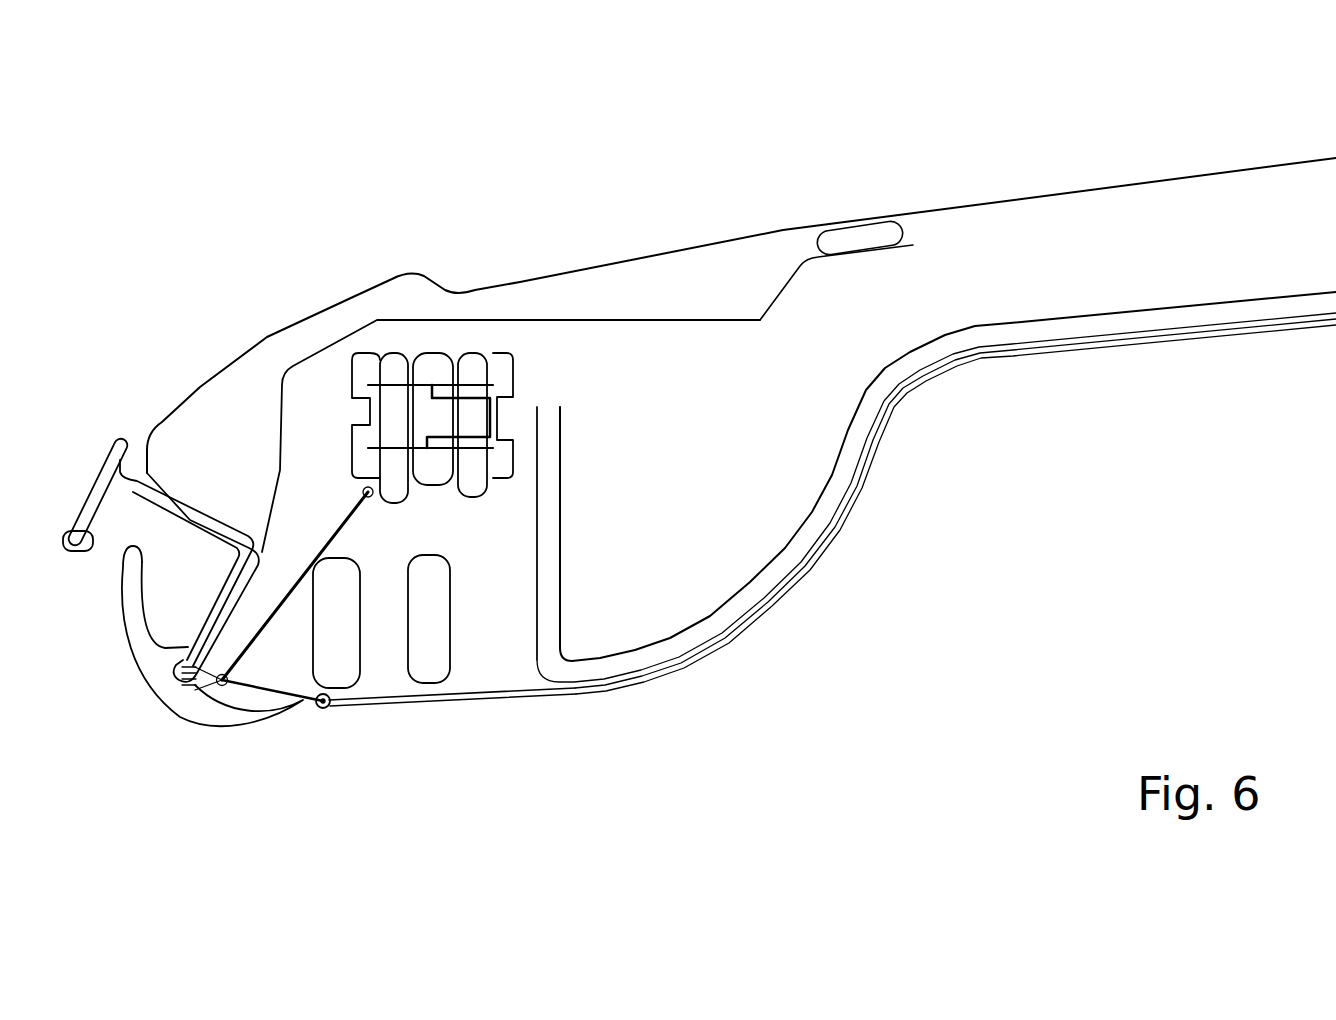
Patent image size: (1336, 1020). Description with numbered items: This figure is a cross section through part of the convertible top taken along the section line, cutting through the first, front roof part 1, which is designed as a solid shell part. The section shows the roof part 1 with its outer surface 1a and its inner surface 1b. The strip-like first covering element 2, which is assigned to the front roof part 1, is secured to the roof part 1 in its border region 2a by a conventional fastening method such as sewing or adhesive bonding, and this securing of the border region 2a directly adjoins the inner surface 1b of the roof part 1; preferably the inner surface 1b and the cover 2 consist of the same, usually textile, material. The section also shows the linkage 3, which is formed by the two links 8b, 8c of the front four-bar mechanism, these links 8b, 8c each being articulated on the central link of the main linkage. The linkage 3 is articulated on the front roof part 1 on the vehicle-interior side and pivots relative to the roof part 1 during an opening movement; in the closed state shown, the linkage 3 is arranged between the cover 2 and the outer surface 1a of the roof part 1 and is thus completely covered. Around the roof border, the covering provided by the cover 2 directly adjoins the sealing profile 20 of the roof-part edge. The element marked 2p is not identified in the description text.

The front roof part 1 is at (948, 440).
The outer surface 1a is at (783, 230).
The inner surface 1b is at (1053, 353).
The covering element 2 is at (418, 705).
The border region 2a is at (563, 700).
The link plate 2p is at (263, 690).
The linkage 3 is at (514, 526).
The link 8b is at (435, 620).
The link 8c is at (347, 670).
The sealing profile 20 is at (155, 672).